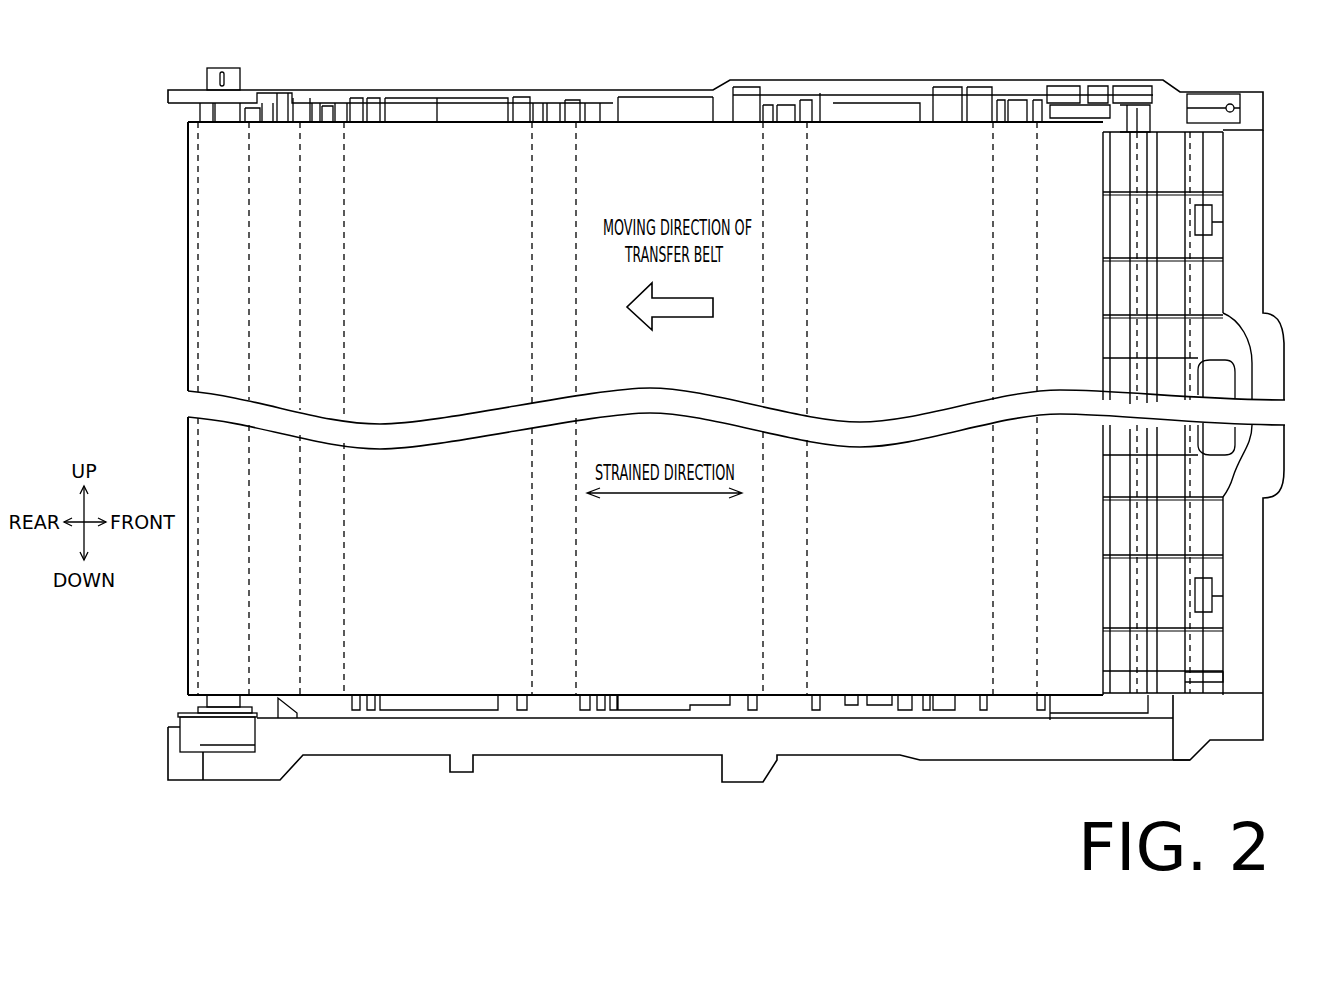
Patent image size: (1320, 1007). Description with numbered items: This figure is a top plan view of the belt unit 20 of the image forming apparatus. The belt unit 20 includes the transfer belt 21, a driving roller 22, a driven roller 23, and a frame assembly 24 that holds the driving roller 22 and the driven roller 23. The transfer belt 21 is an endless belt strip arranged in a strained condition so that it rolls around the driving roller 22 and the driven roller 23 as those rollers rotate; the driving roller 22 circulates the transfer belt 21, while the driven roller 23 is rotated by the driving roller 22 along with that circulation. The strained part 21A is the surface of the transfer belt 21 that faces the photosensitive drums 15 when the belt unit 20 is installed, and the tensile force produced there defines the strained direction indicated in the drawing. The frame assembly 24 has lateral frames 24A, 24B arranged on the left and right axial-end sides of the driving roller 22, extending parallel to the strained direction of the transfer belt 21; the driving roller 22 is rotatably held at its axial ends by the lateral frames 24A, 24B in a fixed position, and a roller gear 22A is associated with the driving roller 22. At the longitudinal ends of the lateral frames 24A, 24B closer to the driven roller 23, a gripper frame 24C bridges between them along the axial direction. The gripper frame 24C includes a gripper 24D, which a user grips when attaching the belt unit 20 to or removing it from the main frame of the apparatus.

The photosensitive drum 15 is at (344, 153).
The belt unit 20 is at (168, 226).
The transfer belt 21 is at (440, 220).
The strained part 21A is at (955, 677).
The driving roller 22 is at (250, 157).
The roller gear 22A is at (217, 733).
The driven roller 23 is at (1190, 150).
The frame assembly 24 is at (650, 702).
The lateral frame 24A is at (580, 742).
The lateral frame 24B is at (670, 93).
The gripper frame 24C is at (1240, 644).
The gripper 24D is at (1238, 440).